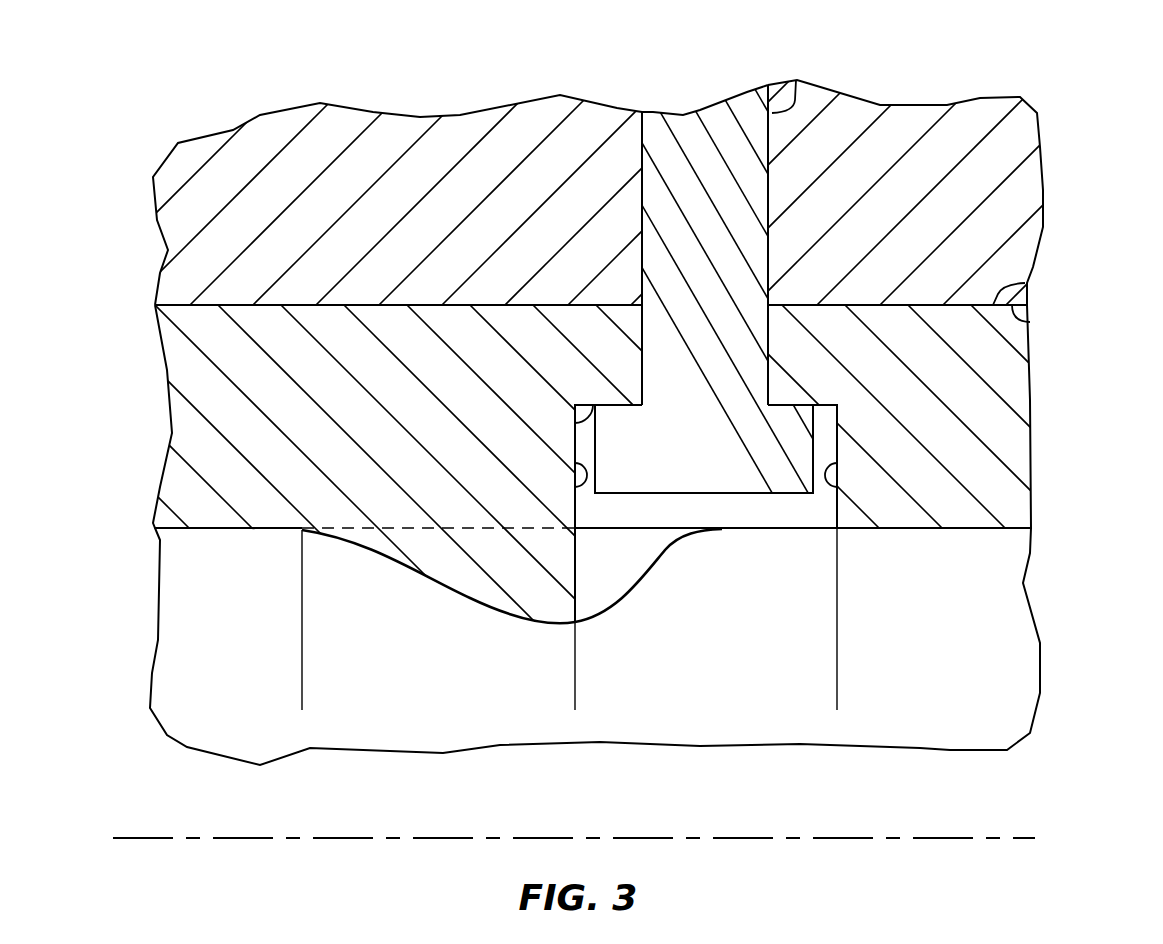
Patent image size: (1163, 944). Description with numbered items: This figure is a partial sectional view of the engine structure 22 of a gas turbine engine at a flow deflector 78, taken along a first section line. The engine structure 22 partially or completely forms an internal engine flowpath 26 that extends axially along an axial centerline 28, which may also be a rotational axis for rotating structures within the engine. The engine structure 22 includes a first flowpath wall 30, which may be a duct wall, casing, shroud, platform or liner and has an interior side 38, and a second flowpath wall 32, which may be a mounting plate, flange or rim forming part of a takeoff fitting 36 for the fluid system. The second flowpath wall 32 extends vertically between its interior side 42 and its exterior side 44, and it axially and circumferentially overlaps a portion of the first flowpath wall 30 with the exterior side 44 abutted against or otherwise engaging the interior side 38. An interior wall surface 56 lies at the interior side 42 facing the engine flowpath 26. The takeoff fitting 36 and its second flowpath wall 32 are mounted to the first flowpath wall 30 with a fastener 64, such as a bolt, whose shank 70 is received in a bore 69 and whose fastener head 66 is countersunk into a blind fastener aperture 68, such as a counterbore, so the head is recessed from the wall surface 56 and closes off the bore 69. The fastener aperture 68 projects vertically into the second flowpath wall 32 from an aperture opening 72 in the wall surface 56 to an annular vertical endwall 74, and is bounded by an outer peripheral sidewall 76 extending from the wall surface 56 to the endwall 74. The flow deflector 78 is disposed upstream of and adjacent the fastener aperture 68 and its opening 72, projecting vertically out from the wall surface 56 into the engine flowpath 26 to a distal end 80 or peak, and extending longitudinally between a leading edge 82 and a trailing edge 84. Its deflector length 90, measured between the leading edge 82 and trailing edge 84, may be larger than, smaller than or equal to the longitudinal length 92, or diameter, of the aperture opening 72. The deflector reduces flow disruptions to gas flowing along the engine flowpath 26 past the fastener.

The engine structure 22 is at (110, 162).
The engine flowpath 26 is at (227, 682).
The axial centerline 28 is at (127, 838).
The first flowpath wall 30 is at (1062, 170).
The second flowpath wall 32 is at (581, 464).
The takeoff fitting 36 is at (1060, 407).
The interior side 38 is at (1030, 322).
The interior side 42 is at (975, 574).
The exterior side 44 is at (1025, 283).
The interior wall surface 56 is at (993, 533).
The fastener 64 is at (714, 90).
The fastener head 66 is at (813, 427).
The fastener aperture 68 is at (738, 544).
The bore 69 is at (768, 340).
The shank 70 is at (796, 82).
The aperture opening 72 is at (773, 533).
The vertical endwall 74 is at (573, 404).
The outer peripheral sidewall 76 is at (575, 490).
The flow deflector 78 is at (452, 618).
The distal end 80 is at (559, 626).
The leading edge 82 is at (301, 534).
The trailing edge 84 is at (577, 624).
The deflector length 90 is at (302, 700).
The longitudinal length 92 is at (837, 700).